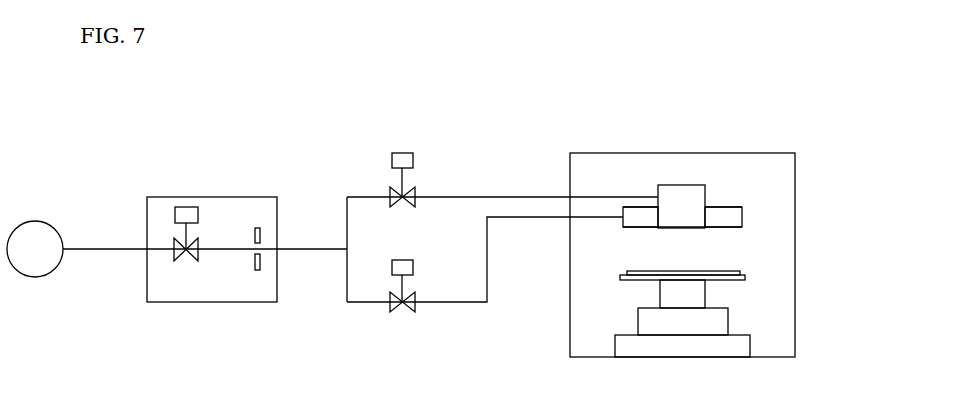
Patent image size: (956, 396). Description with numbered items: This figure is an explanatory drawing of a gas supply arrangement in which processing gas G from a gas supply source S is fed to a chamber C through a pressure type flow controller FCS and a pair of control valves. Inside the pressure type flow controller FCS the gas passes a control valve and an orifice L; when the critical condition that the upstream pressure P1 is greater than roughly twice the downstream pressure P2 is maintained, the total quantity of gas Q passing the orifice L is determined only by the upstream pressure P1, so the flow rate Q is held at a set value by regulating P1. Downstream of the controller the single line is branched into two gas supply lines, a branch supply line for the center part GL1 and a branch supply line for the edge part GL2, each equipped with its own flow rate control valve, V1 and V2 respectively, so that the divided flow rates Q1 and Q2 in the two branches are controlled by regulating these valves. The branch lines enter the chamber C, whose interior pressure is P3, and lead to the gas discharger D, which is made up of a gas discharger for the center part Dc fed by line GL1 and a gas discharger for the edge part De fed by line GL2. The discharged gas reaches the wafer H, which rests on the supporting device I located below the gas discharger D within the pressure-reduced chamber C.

The gas supply source S is at (35, 249).
The processing gas G is at (108, 254).
The pressure type flow controller FCS is at (216, 187).
The orifice L is at (260, 223).
The gas pressure on the upstream side of the orifice P1 is at (218, 252).
The gas pressure on the downstream side of the orifice P2 is at (293, 252).
The pressure inside the chamber P3 is at (613, 173).
The total quantity of gas Q is at (306, 254).
The flow rate control valve V1 is at (400, 152).
The flow rate control valve V2 is at (400, 260).
The flow rate of branch gas supply line Q1 is at (441, 201).
The flow rate of branch gas supply line Q2 is at (439, 306).
The branch supply line for the center part GL1 is at (523, 197).
The branch supply line for the edge part GL2 is at (535, 217).
The chamber C is at (781, 145).
The gas discharger for the center part Dc is at (680, 195).
The gas discharger D is at (708, 179).
The gas discharger for the edge part De is at (722, 217).
The wafer H is at (705, 272).
The supporting device I is at (695, 292).